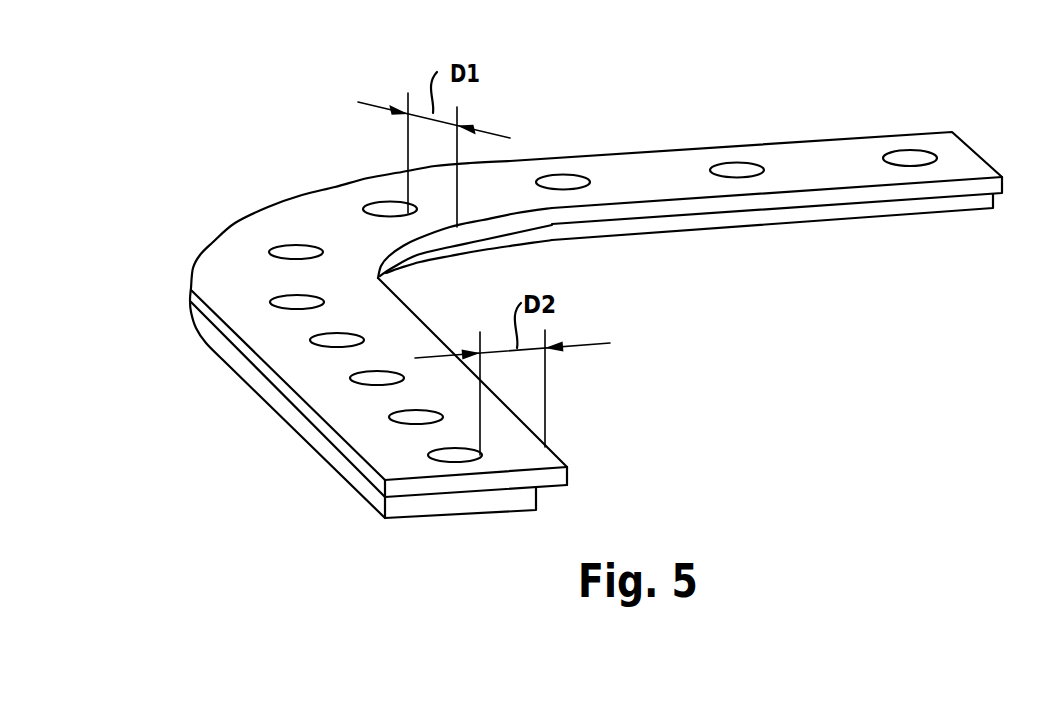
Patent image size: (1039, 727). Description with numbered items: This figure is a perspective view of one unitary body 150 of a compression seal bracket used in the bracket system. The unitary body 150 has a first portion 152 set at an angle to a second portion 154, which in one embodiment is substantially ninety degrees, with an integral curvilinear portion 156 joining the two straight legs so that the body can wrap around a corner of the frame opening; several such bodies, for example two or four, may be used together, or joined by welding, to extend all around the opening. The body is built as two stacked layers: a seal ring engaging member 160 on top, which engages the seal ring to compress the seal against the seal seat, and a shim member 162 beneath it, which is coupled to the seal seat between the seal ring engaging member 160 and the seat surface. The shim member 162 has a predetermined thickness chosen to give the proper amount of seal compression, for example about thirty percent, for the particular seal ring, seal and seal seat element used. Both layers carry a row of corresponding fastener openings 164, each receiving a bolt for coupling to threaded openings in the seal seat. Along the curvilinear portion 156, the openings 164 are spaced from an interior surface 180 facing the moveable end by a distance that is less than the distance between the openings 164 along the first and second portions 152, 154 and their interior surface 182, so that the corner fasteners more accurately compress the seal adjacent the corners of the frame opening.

The unitary body 150 is at (586, 320).
The first portion 152 is at (787, 163).
The second portion 154 is at (327, 450).
The curvilinear portion 156 is at (245, 257).
The seal ring engaging member 160 is at (545, 478).
The shim member 162 is at (442, 502).
The fastener openings 164 is at (738, 173).
The interior surface of curvilinear portion 180 is at (460, 232).
The interior surface of first and second portions 182 is at (807, 196).